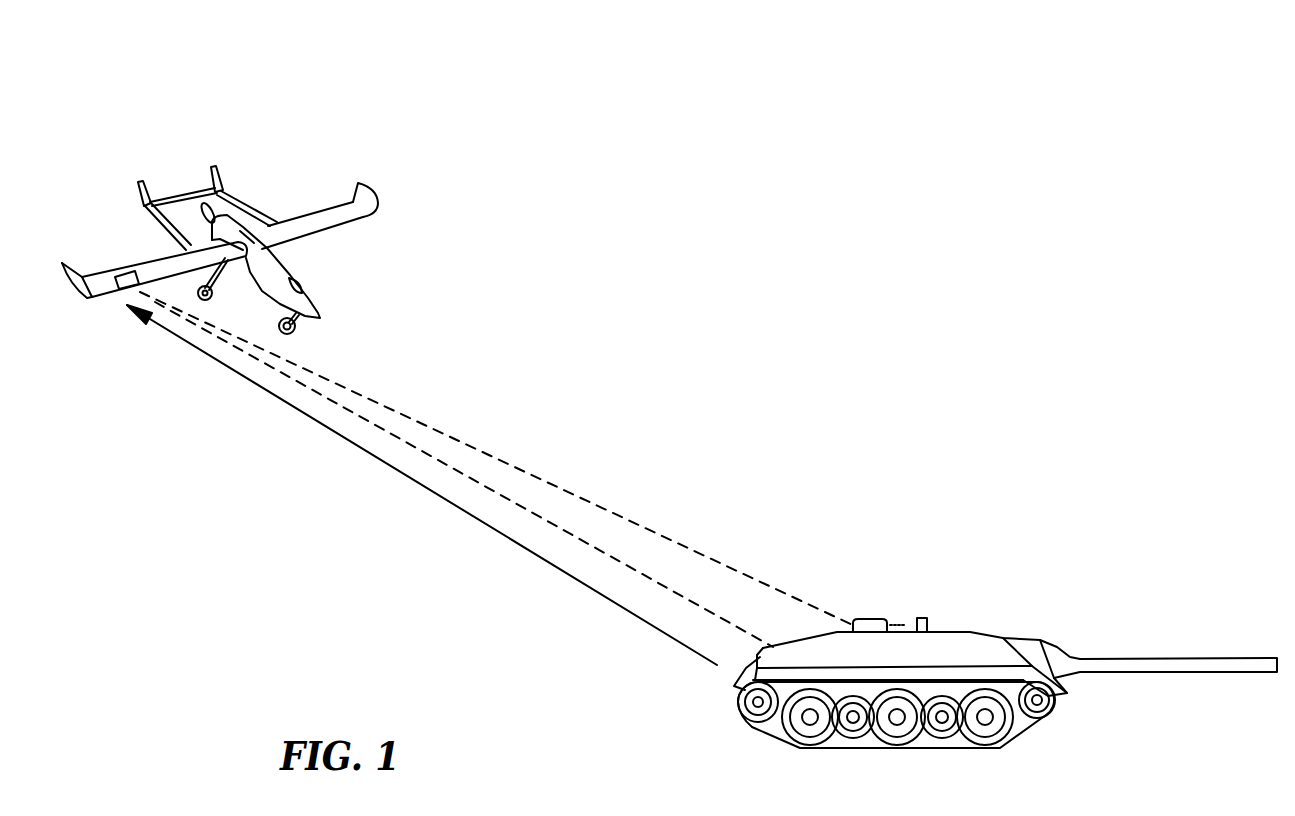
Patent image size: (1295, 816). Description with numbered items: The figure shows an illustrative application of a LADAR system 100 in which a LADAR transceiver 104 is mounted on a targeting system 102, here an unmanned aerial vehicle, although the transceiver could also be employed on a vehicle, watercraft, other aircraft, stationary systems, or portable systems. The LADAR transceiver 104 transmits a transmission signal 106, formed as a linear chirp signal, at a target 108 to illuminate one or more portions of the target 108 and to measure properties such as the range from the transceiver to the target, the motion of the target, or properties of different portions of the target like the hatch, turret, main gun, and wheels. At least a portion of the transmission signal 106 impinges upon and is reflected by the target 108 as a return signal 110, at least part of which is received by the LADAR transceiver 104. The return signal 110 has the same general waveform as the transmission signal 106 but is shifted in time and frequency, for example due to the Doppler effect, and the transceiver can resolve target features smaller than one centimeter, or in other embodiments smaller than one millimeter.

The LADAR system 100 is at (198, 130).
The targeting system 102 is at (350, 222).
The LADAR transceiver 104 is at (123, 284).
The transmission signal 106 is at (760, 582).
The target 108 is at (1020, 637).
The return signal 110 is at (603, 595).